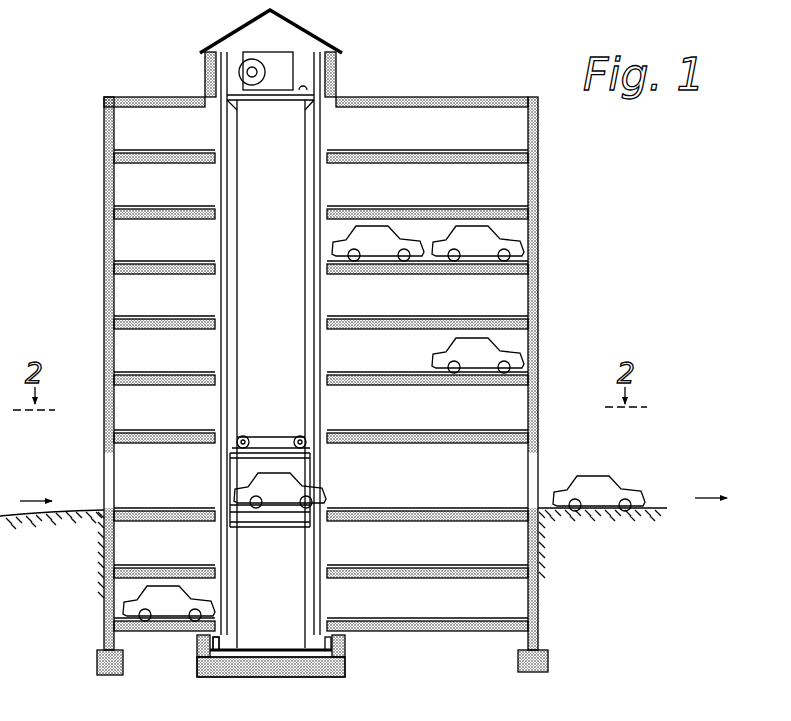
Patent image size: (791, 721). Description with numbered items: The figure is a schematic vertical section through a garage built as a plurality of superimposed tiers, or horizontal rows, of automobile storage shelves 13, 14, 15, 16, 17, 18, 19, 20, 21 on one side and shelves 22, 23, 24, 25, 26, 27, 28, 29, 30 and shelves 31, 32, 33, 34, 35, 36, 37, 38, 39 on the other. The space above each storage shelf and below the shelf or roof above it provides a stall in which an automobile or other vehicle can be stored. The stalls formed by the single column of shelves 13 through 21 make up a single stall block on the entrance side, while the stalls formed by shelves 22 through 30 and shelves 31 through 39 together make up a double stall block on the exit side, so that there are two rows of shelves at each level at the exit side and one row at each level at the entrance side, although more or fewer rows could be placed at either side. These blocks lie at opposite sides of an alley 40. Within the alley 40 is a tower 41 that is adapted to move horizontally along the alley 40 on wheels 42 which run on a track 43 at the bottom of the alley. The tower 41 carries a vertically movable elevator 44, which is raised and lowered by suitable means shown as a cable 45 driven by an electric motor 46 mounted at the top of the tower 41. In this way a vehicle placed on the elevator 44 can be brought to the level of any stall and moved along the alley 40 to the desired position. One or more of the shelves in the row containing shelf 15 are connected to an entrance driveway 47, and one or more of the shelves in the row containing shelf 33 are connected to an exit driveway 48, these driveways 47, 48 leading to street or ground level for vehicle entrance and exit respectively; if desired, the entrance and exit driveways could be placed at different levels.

The automobile storage shelf 13 is at (120, 618).
The automobile storage shelf 14 is at (133, 565).
The automobile storage shelf 15 is at (137, 508).
The automobile storage shelf 16 is at (137, 430).
The automobile storage shelf 17 is at (130, 372).
The automobile storage shelf 18 is at (133, 316).
The automobile storage shelf 19 is at (125, 261).
The automobile storage shelf 20 is at (127, 206).
The automobile storage shelf 21 is at (127, 150).
The automobile storage shelf 22 is at (367, 618).
The automobile storage shelf 23 is at (365, 565).
The automobile storage shelf 24 is at (360, 508).
The automobile storage shelf 25 is at (360, 430).
The automobile storage shelf 26 is at (352, 372).
The automobile storage shelf 27 is at (375, 316).
The automobile storage shelf 28 is at (370, 262).
The automobile storage shelf 29 is at (363, 206).
The automobile storage shelf 30 is at (367, 150).
The automobile storage shelf 31 is at (505, 618).
The automobile storage shelf 32 is at (503, 563).
The automobile storage shelf 33 is at (490, 506).
The automobile storage shelf 34 is at (505, 430).
The automobile storage shelf 35 is at (520, 372).
The automobile storage shelf 36 is at (510, 316).
The automobile storage shelf 37 is at (520, 261).
The automobile storage shelf 38 is at (510, 206).
The automobile storage shelf 39 is at (507, 150).
The alley 40 is at (278, 598).
The tower 41 is at (224, 183).
The wheels 42 is at (197, 643).
The track 43 is at (197, 657).
The elevator 44 is at (258, 518).
The cable 45 is at (305, 285).
The electric motor 46 is at (284, 85).
The entrance driveway 47 is at (60, 518).
The exit driveway 48 is at (603, 512).